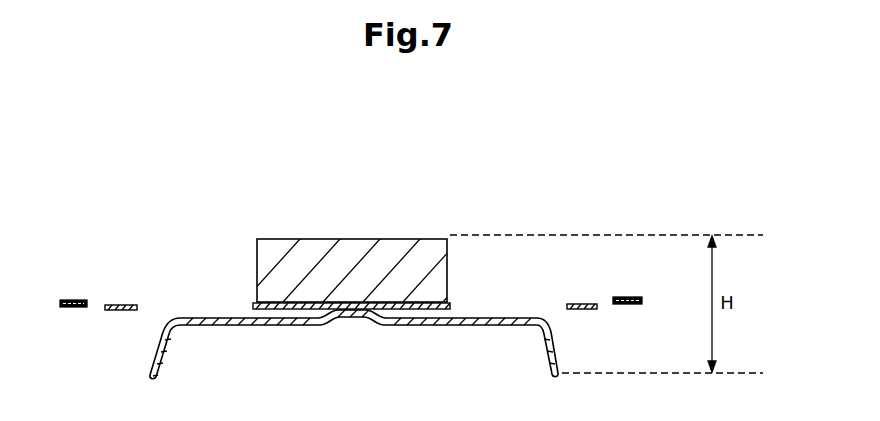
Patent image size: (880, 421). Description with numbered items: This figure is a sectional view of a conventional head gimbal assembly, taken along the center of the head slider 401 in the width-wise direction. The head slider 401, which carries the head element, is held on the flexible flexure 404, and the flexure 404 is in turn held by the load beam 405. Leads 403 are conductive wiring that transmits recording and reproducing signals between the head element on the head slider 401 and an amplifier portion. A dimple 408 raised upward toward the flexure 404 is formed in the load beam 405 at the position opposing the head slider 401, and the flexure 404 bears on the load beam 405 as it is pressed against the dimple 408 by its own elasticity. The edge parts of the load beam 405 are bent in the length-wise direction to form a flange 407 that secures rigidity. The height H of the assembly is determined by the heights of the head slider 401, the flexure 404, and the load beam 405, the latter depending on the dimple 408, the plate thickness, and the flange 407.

The head slider 401 is at (353, 238).
The lead 403 is at (70, 298).
The flexure 404 is at (123, 311).
The load beam 405 is at (450, 327).
The flange 407 is at (150, 373).
The dimple 408 is at (347, 316).